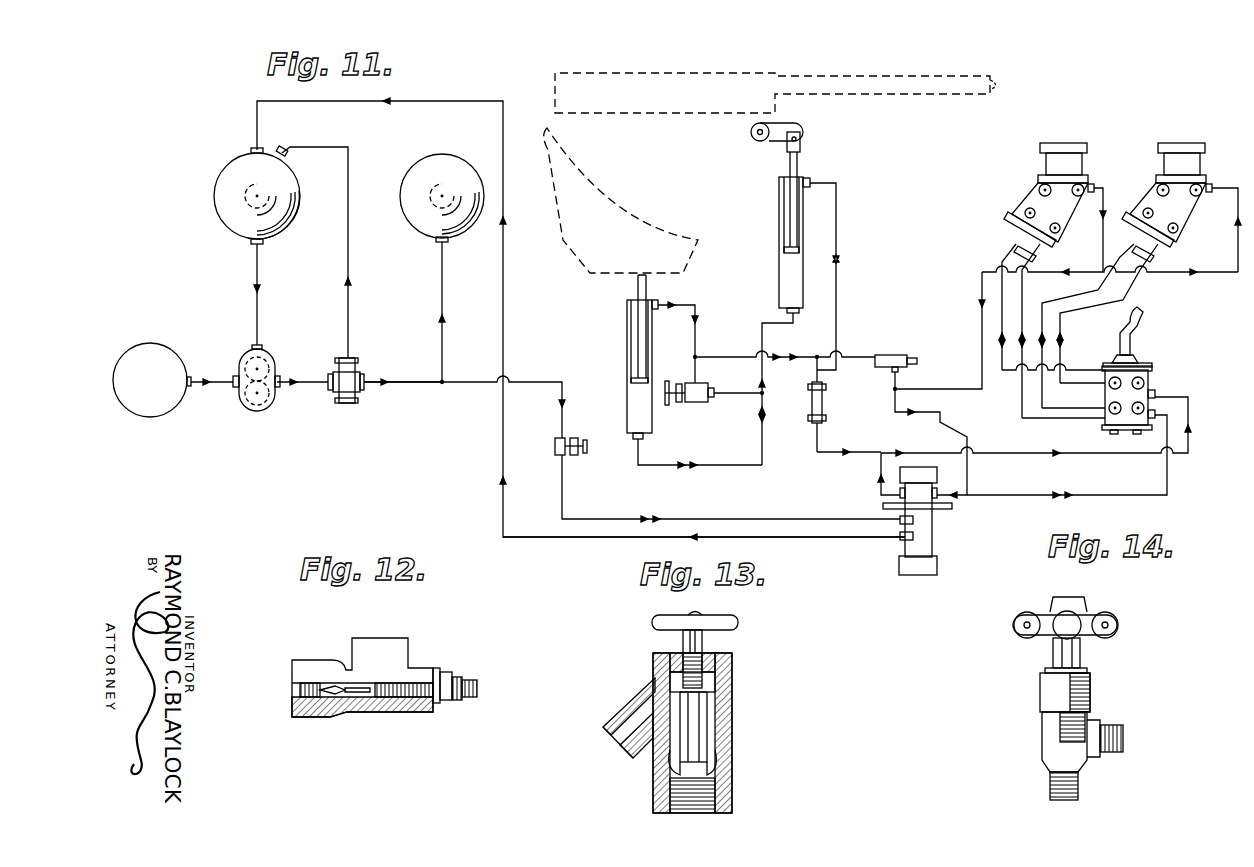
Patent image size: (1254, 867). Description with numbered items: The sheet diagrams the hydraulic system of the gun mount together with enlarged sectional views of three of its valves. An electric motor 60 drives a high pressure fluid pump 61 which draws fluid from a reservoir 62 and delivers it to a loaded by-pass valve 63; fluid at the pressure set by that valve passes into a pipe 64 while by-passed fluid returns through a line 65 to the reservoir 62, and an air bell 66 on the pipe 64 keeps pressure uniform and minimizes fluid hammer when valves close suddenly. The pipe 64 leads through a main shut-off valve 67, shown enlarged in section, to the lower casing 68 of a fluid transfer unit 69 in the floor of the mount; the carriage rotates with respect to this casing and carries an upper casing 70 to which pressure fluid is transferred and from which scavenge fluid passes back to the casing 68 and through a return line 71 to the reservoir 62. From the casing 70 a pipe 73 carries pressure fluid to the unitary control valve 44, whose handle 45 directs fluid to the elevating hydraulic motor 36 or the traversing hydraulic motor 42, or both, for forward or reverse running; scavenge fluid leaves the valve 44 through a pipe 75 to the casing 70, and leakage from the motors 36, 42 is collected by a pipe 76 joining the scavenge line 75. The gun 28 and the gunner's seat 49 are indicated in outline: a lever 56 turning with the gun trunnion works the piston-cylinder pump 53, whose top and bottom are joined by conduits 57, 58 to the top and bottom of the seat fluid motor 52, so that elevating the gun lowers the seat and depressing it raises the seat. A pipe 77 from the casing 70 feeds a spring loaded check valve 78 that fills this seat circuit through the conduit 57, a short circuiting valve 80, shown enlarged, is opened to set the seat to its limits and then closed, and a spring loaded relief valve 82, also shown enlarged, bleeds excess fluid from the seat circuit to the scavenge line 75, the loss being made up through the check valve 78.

In FIG. 11, the automatic gun 28 is at (657, 116).
In FIG. 11, the hydraulic motor 36 is at (1054, 280).
In FIG. 11, the hydraulic motor 42 is at (1141, 275).
In FIG. 11, the valve assembly 44 is at (1152, 383).
In FIG. 11, the handle 45 is at (1143, 328).
In FIG. 11, the gunner's seat 49 is at (618, 212).
In FIG. 11, the piston cylinder fluid motor 52 is at (655, 357).
In FIG. 11, the piston-cylinder pump 53 is at (778, 226).
In FIG. 11, the lever 56 is at (776, 137).
In FIG. 11, the conduit 57 is at (838, 291).
In FIG. 11, the conduit 58 is at (758, 336).
In FIG. 11, the electric motor 60 is at (153, 412).
In FIG. 11, the high pressure fluid pump 61 is at (234, 412).
In FIG. 11, the reservoir 62 is at (240, 230).
In FIG. 11, the loaded by-pass valve 63 is at (333, 366).
In FIG. 11, the pipe 64 is at (372, 378).
In FIG. 11, the line 65 is at (348, 310).
In FIG. 11, the air bell 66 is at (447, 238).
In FIG. 11, the main shut-off valve 67 is at (568, 455).
In FIG. 13, the main shut-off valve 67 is at (652, 657).
In FIG. 11, the lower casing 68 is at (937, 548).
In FIG. 11, the fluid transfer unit 69 is at (940, 522).
In FIG. 11, the upper casing 70 is at (937, 478).
In FIG. 11, the return line 71 is at (775, 539).
In FIG. 11, the pipe 73 is at (985, 453).
In FIG. 11, the pipe 75 is at (1108, 492).
In FIG. 11, the pipe 76 is at (982, 302).
In FIG. 11, the pipe 77 is at (822, 447).
In FIG. 11, the spring loaded check valve 78 is at (826, 392).
In FIG. 11, the short circuiting valve 80 is at (688, 402).
In FIG. 14, the short circuiting valve 80 is at (1040, 693).
In FIG. 11, the spring loaded relief valve 82 is at (880, 357).
In FIG. 12, the spring loaded relief valve 82 is at (372, 712).